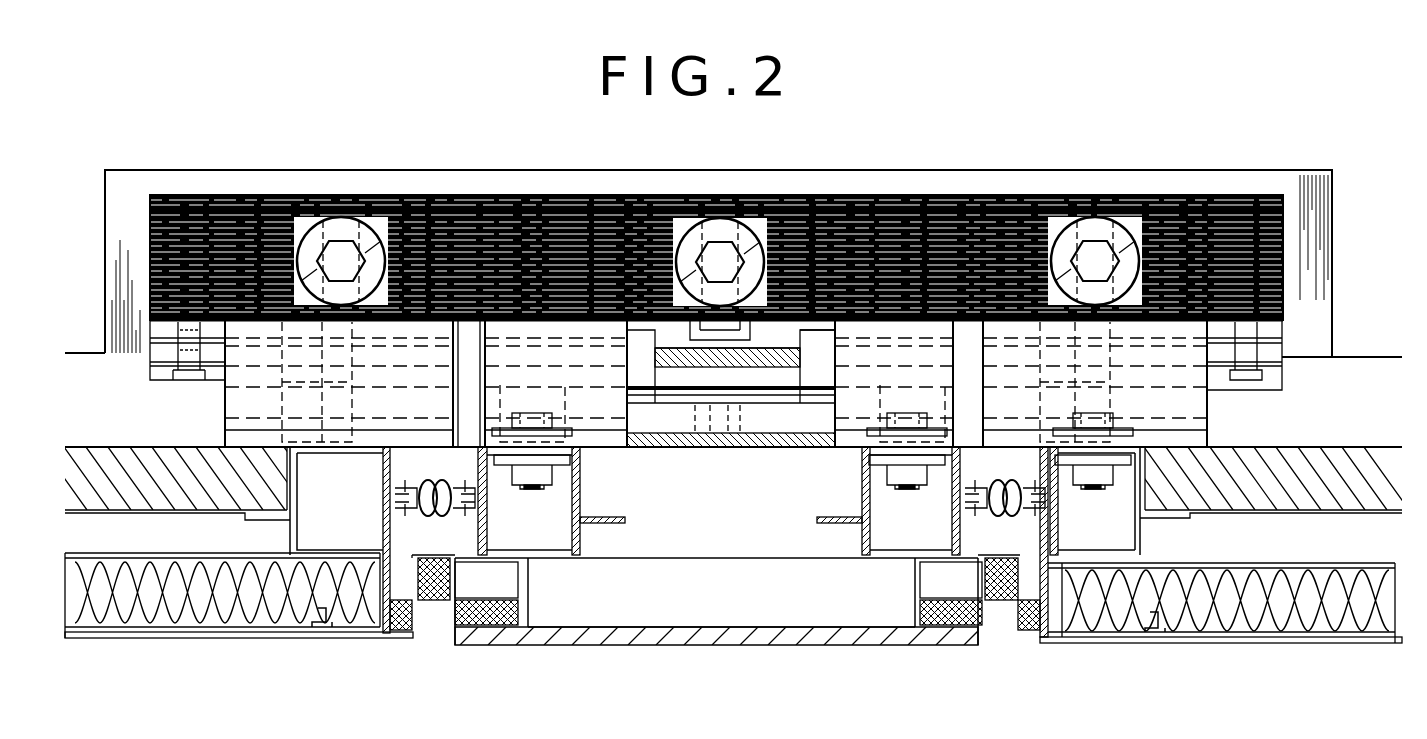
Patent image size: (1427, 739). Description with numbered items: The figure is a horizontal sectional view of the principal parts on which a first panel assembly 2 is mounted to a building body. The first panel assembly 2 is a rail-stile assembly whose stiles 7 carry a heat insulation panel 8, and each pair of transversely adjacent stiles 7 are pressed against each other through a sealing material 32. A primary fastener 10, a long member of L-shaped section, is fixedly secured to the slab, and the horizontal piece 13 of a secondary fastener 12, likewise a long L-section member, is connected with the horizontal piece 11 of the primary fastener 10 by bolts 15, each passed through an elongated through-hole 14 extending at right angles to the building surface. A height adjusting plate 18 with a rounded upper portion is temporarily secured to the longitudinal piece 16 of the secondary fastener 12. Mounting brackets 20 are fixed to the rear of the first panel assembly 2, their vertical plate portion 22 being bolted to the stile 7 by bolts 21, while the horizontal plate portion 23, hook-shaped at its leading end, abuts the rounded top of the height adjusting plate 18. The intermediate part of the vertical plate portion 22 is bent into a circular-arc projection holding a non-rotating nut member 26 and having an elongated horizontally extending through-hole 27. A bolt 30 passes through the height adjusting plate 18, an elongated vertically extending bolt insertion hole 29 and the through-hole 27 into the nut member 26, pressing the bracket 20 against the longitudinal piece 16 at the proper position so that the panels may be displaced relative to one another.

The first panel assembly 2 is at (222, 640).
The stile 7 is at (297, 522).
The heat insulation panel 8 is at (250, 620).
The primary fastener 10 is at (652, 188).
The horizontal piece 11 is at (985, 192).
The secondary fastener 12 is at (1032, 215).
The horizontal piece 13 is at (538, 215).
The elongated through-hole 14 is at (715, 218).
The bolt 15 is at (727, 257).
The longitudinal piece 16 is at (468, 378).
The height adjusting plate 18 is at (833, 400).
The mounting bracket 20 is at (300, 452).
The bolt 21 is at (480, 447).
The vertical plate portion 22 is at (645, 444).
The horizontal plate portion 23 is at (578, 333).
The nut member 26 is at (695, 435).
The elongated horizontally extending through-hole 27 is at (712, 422).
The elongated vertically extending bolt insertion hole 29 is at (730, 440).
The bolt 30 is at (735, 432).
The sealing material 32 is at (428, 520).